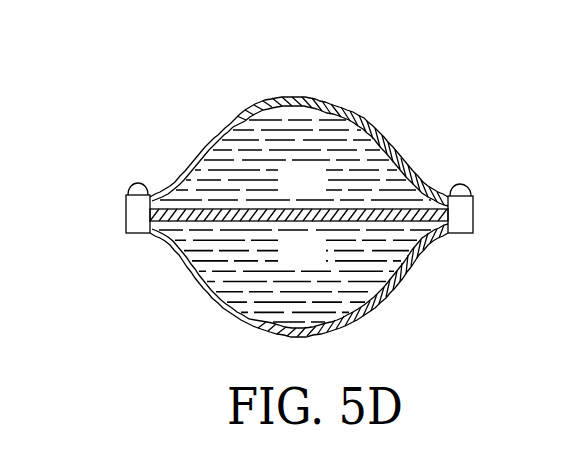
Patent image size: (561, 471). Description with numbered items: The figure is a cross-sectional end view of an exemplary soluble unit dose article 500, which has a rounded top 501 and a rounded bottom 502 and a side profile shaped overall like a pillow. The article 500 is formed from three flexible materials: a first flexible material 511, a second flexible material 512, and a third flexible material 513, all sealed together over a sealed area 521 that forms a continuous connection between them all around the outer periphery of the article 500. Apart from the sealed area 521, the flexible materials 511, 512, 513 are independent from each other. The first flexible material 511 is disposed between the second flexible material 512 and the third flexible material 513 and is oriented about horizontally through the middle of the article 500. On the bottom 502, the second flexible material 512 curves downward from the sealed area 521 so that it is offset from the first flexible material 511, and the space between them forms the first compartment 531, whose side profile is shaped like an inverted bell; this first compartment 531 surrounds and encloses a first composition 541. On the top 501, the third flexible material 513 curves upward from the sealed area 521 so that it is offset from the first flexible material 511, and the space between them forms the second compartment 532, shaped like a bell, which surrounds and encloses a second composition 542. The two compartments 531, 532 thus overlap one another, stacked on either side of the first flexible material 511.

The soluble unit dose article 500 is at (150, 110).
The rounded top 501 is at (210, 121).
The rounded bottom 502 is at (222, 330).
The first flexible material 511 is at (383, 222).
The second flexible material 512 is at (187, 267).
The third flexible material 513 is at (203, 146).
The sealed area 521 is at (140, 185).
The first compartment 531 is at (336, 268).
The second compartment 532 is at (334, 150).
The first composition 541 is at (320, 262).
The second composition 542 is at (322, 191).